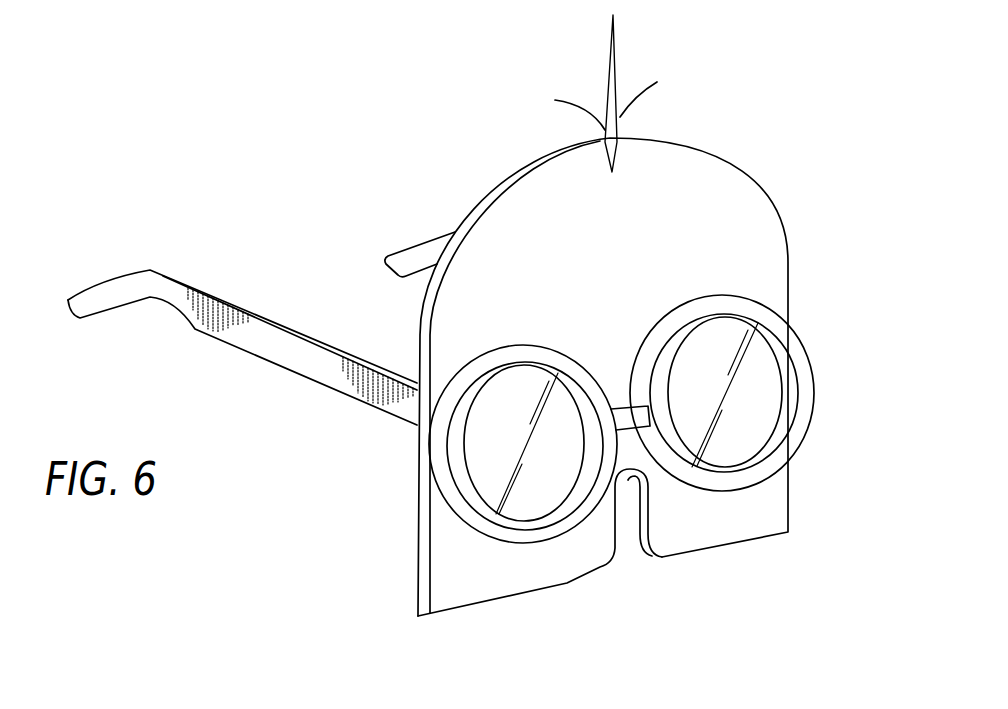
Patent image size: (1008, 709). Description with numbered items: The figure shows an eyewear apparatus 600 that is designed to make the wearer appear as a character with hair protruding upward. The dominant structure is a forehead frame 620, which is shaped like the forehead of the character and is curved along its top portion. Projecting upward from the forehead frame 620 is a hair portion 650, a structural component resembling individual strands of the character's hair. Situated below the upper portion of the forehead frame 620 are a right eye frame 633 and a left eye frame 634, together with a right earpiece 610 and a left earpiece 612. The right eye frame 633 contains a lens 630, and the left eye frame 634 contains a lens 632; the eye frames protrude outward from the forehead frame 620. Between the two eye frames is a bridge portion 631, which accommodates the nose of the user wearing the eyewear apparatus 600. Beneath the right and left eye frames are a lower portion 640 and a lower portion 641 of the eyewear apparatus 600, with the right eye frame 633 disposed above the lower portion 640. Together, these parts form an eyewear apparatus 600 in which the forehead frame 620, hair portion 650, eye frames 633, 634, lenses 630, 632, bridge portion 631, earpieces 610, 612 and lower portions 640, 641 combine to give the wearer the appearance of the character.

The eyewear apparatus 600 is at (312, 145).
The right earpiece 610 is at (229, 315).
The left earpiece 612 is at (433, 233).
The forehead frame 620 is at (733, 203).
The lens 630 is at (540, 473).
The bridge portion 631 is at (625, 462).
The lens 632 is at (753, 422).
The right eye frame 633 is at (465, 493).
The left eye frame 634 is at (805, 365).
The lower portion 640 is at (460, 570).
The lower portion 641 is at (703, 518).
The hair portion 650 is at (622, 118).